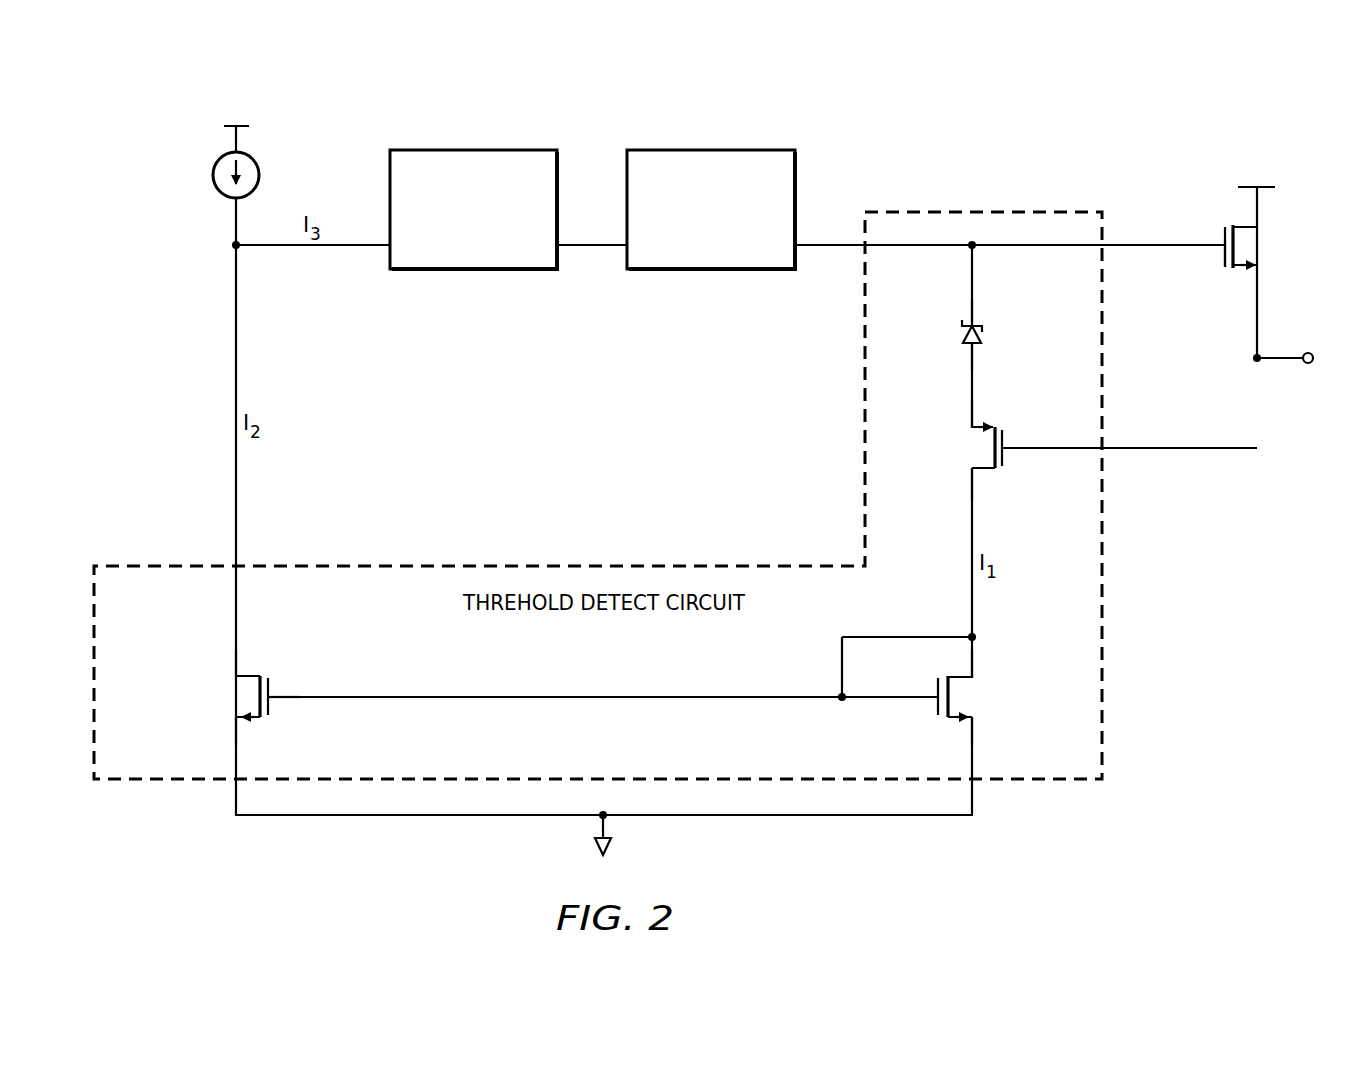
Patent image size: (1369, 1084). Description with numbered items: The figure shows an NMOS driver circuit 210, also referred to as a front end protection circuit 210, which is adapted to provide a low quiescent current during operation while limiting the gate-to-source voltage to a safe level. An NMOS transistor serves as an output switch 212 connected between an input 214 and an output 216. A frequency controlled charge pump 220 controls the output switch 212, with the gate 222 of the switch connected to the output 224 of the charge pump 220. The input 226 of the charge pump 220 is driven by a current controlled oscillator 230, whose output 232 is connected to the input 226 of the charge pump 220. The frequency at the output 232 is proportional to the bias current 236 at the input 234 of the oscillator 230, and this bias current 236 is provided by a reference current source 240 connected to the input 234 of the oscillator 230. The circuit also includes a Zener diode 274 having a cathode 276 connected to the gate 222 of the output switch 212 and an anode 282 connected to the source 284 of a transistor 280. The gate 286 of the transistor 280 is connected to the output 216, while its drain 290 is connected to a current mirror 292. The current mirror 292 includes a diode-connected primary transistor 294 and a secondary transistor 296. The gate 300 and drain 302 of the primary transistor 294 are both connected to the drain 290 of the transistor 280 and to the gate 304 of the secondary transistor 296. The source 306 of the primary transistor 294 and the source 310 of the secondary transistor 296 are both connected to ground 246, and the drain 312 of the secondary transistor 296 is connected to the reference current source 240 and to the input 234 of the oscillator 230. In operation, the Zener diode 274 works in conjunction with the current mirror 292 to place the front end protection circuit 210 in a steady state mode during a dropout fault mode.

The NMOS driver circuit 210 is at (937, 120).
The output switch 212 is at (1216, 194).
The input 214 is at (1264, 188).
The output 216 is at (1280, 356).
The frequency controlled charge pump 220 is at (711, 150).
The gate 222 is at (1222, 262).
The output of the charge pump 224 is at (800, 244).
The input of the charge pump 226 is at (622, 244).
The current controlled oscillator 230 is at (472, 150).
The output of the oscillator 232 is at (562, 248).
The input of the oscillator 234 is at (382, 248).
The bias current 236 is at (288, 248).
The reference current source 240 is at (213, 172).
The ground 246 is at (598, 848).
The Zener diode 274 is at (962, 331).
The cathode 276 is at (975, 323).
The transistor 280 is at (1008, 490).
The anode 282 is at (975, 345).
The source 284 is at (968, 425).
The gate 286 is at (1006, 442).
The drain 290 is at (968, 471).
The current mirror 292 is at (208, 697).
The primary transistor 294 is at (925, 712).
The secondary transistor 296 is at (287, 712).
The gate 300 is at (936, 690).
The drain 302 is at (975, 674).
The gate 304 is at (272, 690).
The source 306 is at (975, 720).
The source 310 is at (234, 720).
The drain 312 is at (234, 674).